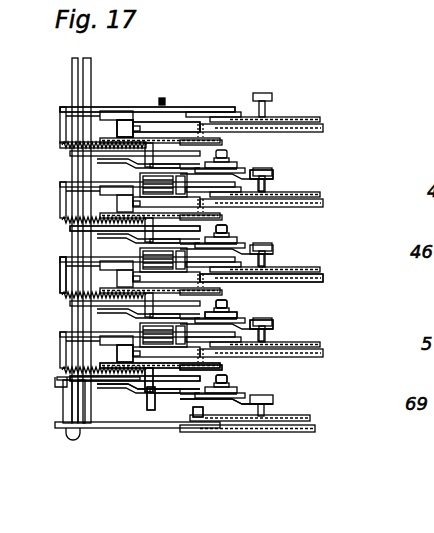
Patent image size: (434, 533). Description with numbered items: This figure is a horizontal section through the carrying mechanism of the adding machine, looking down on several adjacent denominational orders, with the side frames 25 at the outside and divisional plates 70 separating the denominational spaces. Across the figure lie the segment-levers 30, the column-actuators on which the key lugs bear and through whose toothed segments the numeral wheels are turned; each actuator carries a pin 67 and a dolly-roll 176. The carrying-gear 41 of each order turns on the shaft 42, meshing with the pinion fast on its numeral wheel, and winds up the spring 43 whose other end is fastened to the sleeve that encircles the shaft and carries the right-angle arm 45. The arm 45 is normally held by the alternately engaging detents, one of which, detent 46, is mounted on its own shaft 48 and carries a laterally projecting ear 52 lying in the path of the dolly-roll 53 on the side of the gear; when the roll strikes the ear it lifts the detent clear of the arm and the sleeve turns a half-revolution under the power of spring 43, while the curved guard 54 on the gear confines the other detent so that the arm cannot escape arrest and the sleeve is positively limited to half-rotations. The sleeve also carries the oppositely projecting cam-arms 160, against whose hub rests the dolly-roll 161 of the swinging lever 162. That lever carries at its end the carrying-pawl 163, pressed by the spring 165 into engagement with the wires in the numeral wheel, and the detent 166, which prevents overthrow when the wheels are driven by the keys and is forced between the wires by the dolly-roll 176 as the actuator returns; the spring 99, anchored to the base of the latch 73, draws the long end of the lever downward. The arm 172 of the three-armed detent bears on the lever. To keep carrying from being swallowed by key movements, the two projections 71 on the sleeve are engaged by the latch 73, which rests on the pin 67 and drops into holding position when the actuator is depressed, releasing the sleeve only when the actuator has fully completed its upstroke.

The side frames 25 is at (265, 432).
The segment-lever 30 is at (289, 408).
The carrying-gear 41 is at (228, 302).
The shaft 42 is at (163, 103).
The spring 43 is at (67, 326).
The right-angle arm 45 is at (182, 336).
The detent 46 is at (133, 118).
The shaft 48 is at (88, 92).
The ear 52 is at (122, 120).
The dolly-roll 53 is at (118, 354).
The curved guard 54 is at (205, 130).
The pin 67 is at (203, 412).
The divisional plates 70 is at (433, 278).
The projections 71 is at (70, 250).
The latch 73 is at (188, 108).
The spring 99 is at (66, 141).
The cam-arms 160 is at (146, 390).
The dolly-roll 161 is at (170, 337).
The swinging lever 162 is at (112, 383).
The carrying-pawl 163 is at (232, 318).
The spring 165 is at (228, 234).
The detent 166 is at (247, 394).
The arm of three-armed detent 172 is at (113, 388).
The dolly-roll 176 is at (273, 173).